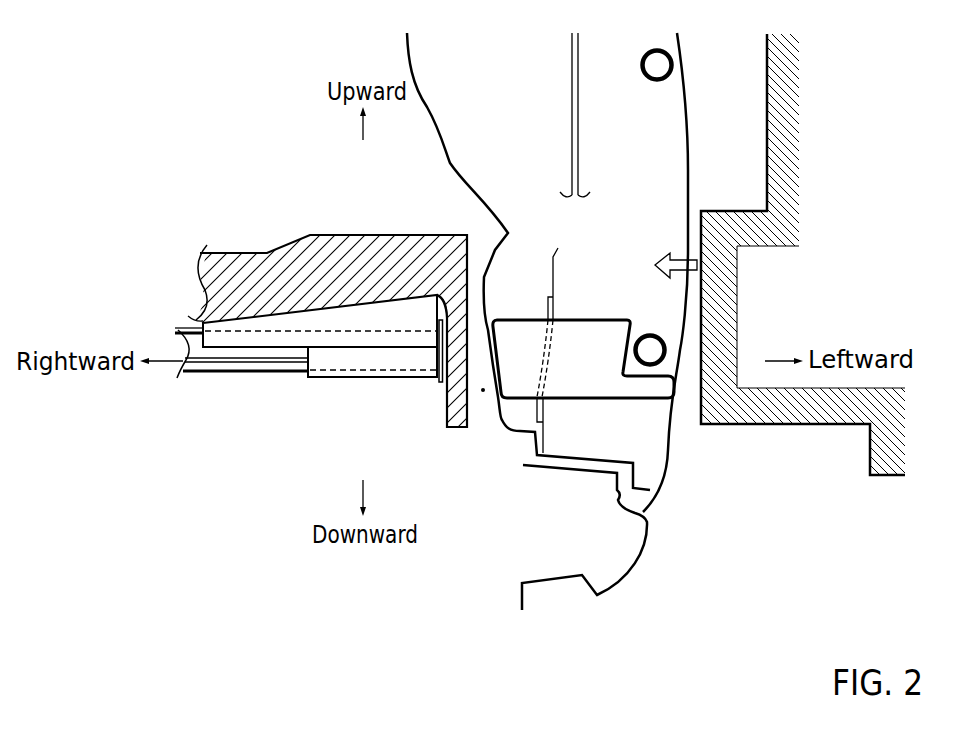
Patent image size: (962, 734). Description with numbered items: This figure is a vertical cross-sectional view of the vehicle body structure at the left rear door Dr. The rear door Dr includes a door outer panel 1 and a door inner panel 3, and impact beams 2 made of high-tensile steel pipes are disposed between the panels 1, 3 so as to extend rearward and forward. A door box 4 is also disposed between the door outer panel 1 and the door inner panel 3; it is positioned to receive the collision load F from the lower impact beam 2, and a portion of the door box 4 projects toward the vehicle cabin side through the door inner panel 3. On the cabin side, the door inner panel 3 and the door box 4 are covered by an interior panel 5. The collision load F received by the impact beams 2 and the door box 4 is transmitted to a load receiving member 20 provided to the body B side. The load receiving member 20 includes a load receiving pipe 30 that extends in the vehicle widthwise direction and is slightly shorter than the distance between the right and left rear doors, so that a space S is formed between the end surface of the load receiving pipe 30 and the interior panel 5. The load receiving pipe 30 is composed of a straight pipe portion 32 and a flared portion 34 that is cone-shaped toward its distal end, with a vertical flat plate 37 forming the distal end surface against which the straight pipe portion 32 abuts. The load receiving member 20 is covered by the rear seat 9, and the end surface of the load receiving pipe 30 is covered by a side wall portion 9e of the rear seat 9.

The door outer panel 1 is at (689, 171).
The impact beam 2 is at (660, 64).
The door inner panel 3 is at (578, 163).
The door box 4 is at (615, 406).
The interior panel 5 is at (498, 425).
The rear seat 9 is at (255, 265).
The side wall portion of rear seat 9e is at (457, 348).
The load receiving member 20 is at (267, 392).
The load receiving pipe 30 is at (326, 384).
The straight pipe portion 32 is at (227, 362).
The flared portion 34 is at (353, 318).
The vertical flat plate 37 is at (443, 357).
The space S is at (483, 390).
The body B is at (543, 590).
The rear door Dr is at (693, 116).
The collision load F is at (668, 267).